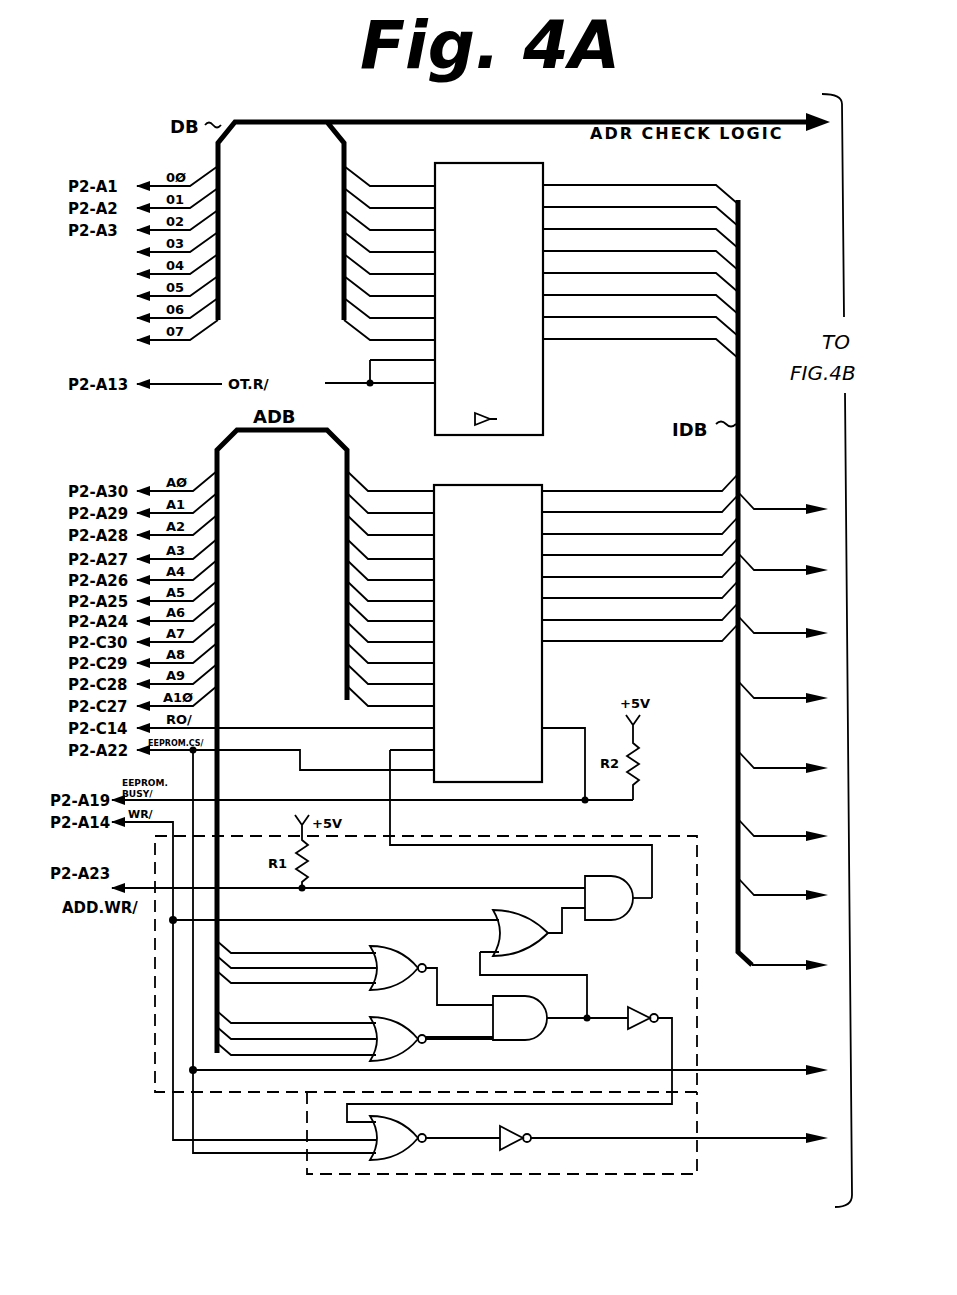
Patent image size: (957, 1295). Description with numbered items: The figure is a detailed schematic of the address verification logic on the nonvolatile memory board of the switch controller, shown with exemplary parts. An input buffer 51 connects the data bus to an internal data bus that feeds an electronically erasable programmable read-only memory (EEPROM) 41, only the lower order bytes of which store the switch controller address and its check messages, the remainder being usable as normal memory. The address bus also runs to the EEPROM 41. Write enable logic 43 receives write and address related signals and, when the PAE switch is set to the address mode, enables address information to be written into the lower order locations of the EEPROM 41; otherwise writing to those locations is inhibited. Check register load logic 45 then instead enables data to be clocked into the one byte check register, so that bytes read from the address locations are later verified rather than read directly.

The EEPROM 41 is at (542, 672).
The input buffer 51 is at (543, 386).
The write enable logic 43 is at (155, 1000).
The check register load logic 45 is at (697, 1163).